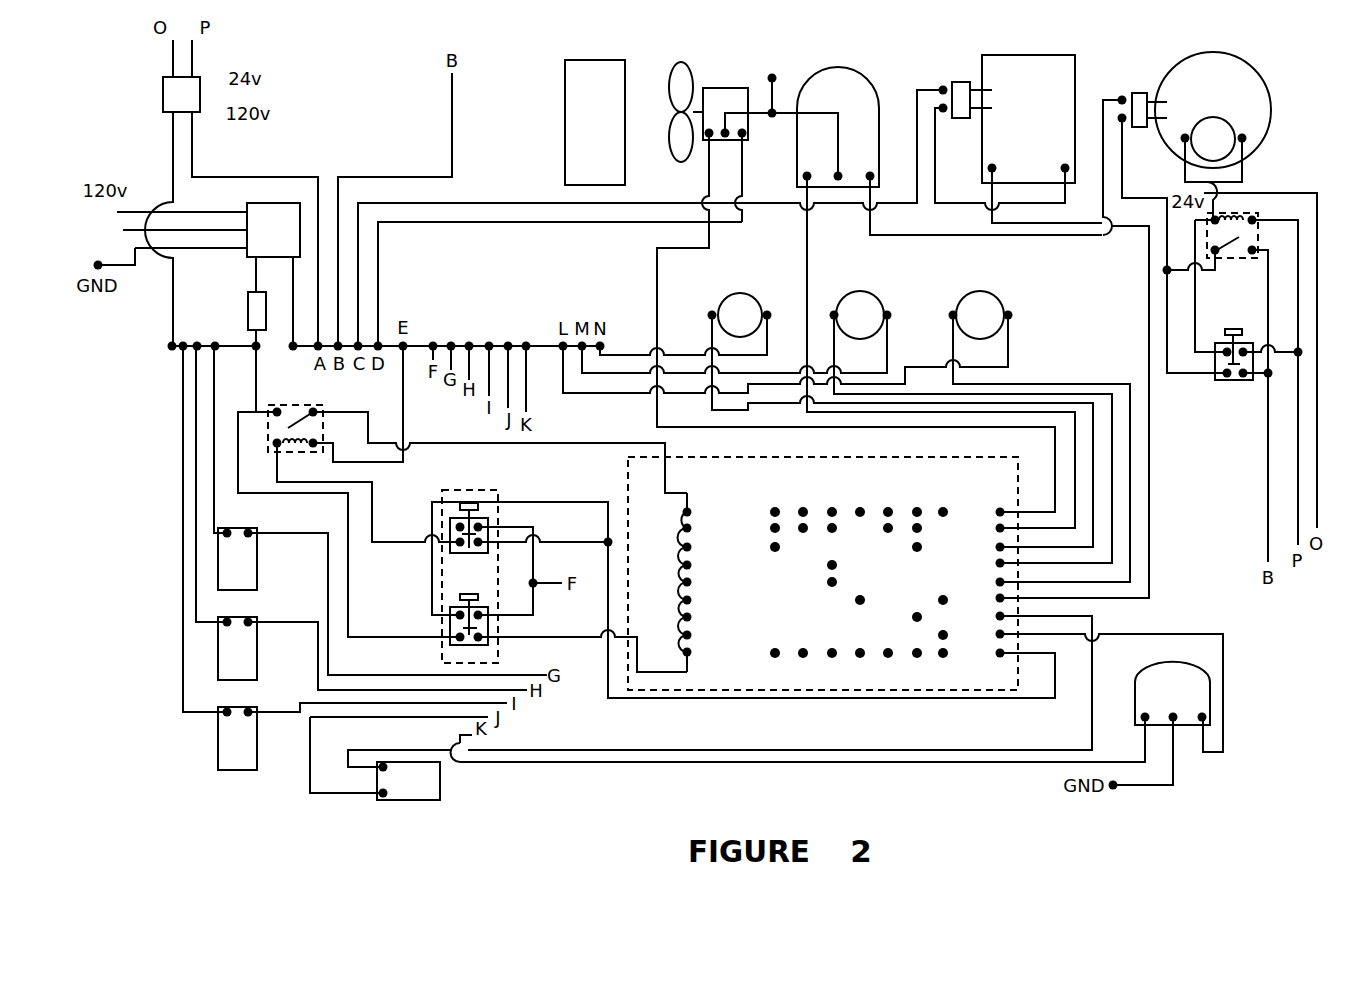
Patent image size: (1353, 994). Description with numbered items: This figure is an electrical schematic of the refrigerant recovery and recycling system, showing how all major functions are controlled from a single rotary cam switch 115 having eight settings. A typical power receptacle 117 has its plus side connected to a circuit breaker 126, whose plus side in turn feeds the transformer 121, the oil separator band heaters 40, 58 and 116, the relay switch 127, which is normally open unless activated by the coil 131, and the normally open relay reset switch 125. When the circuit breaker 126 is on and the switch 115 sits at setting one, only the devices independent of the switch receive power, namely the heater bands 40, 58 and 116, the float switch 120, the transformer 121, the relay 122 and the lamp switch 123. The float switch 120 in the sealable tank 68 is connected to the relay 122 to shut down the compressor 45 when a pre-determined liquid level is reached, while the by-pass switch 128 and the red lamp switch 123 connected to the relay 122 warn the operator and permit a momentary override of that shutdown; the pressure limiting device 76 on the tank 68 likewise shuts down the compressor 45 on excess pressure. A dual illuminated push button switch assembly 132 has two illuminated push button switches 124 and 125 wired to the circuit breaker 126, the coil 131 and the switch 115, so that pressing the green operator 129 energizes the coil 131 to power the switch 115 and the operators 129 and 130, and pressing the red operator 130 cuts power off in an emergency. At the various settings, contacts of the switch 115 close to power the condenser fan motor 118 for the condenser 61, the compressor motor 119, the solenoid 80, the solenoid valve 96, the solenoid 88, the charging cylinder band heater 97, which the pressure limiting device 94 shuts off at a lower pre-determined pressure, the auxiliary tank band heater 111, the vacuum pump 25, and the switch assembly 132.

The transformer 121 is at (163, 100).
The power receptacle 117 is at (262, 203).
The circuit breaker 126 is at (248, 311).
The condenser 61 is at (565, 78).
The condenser fan motor 118 is at (745, 88).
The compressor 45 is at (838, 70).
The compressor motor 119 is at (865, 157).
The pressure limiting device 94 is at (965, 82).
The charging cylinder band heater 97 is at (1040, 55).
The pressure limiting device 76 is at (1145, 93).
The sealable tank 68 is at (1272, 112).
The float switch 120 is at (1233, 118).
The relay 122 is at (1245, 212).
The red lamp switch 123 is at (1223, 329).
The by-pass switch 128 is at (1215, 381).
The relay switch 127 is at (312, 405).
The coil 131 is at (311, 452).
The solenoid 80 is at (747, 293).
The solenoid valve 96 is at (868, 292).
The solenoid 88 is at (985, 292).
The oil separator band heater 40 is at (258, 568).
The oil separator band heater 58 is at (258, 652).
The heater band 116 is at (258, 737).
The auxiliary tank band heater 111 is at (442, 783).
The illuminated operator 130 is at (480, 507).
The illuminated push button switch 124 is at (478, 553).
The illuminated operator 129 is at (488, 597).
The relay reset switch 125 is at (490, 629).
The dual illuminated push button switch assembly 132 is at (498, 653).
The rotary cam switch 115 is at (1020, 608).
The vacuum pump 25 is at (1150, 664).